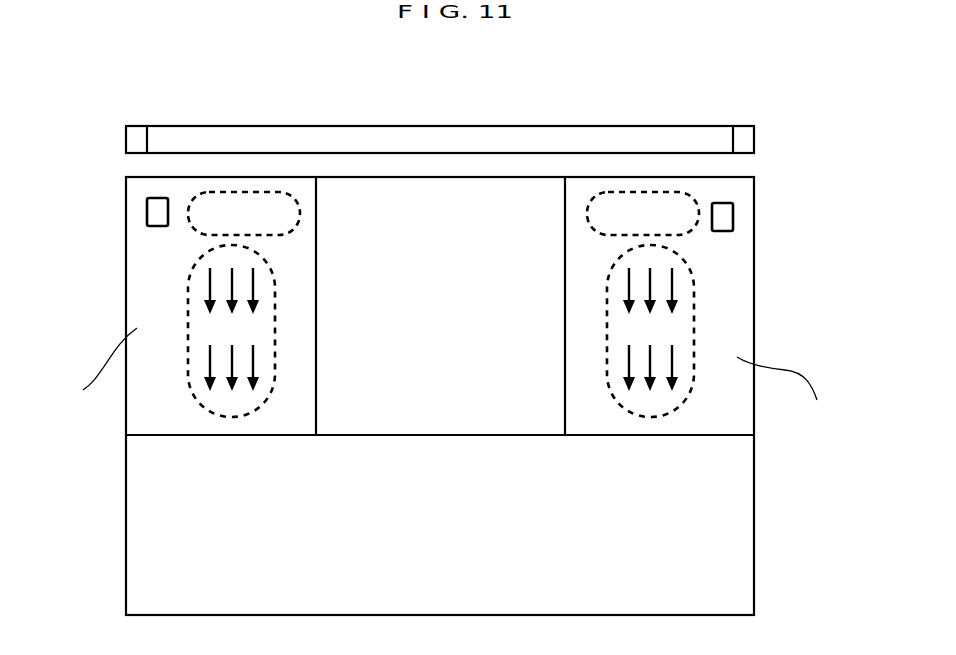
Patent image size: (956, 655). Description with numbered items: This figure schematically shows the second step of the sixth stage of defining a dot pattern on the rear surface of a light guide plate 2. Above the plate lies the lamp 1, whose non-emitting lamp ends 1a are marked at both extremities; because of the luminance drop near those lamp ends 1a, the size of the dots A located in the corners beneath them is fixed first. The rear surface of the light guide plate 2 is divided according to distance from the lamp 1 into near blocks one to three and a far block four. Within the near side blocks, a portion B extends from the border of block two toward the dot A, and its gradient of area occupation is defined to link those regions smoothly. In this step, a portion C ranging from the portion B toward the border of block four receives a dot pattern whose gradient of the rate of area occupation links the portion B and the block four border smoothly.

The lamp 1 is at (476, 141).
The lamp ends 1a is at (133, 134).
The light guide plate 2 is at (119, 498).
The dots A is at (154, 212).
The portion B is at (443, 213).
The portion C is at (441, 331).